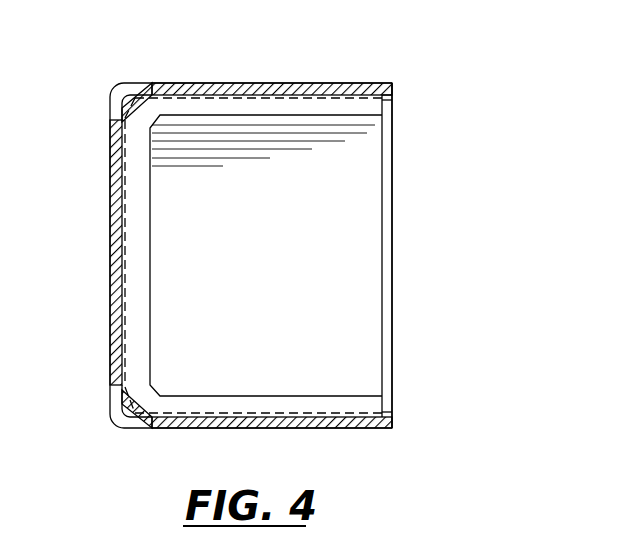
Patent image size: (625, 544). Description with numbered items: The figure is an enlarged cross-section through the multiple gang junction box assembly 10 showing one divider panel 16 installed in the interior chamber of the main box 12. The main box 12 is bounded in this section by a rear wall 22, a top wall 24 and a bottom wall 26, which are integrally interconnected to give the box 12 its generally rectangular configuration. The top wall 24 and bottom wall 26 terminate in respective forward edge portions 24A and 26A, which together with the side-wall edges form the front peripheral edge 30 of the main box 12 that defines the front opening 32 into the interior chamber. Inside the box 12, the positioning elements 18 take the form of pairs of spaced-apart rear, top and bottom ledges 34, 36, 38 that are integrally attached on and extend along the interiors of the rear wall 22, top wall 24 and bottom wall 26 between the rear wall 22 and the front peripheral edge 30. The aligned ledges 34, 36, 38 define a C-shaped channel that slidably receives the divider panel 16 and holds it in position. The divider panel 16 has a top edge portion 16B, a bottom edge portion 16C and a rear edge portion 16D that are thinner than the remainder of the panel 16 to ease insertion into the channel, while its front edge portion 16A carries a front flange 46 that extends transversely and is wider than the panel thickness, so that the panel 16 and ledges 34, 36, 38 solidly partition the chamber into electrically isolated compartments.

The multiple gang junction box assembly 10 is at (160, 68).
The main box 12 is at (368, 80).
The divider panel 16 is at (360, 320).
The front edge portion 16A is at (378, 237).
The top edge portion 16B is at (312, 97).
The bottom edge portion 16C is at (296, 432).
The rear edge portion 16D is at (122, 243).
The positioning element 18 is at (226, 122).
The rear wall 22 is at (110, 296).
The top wall 24 is at (226, 83).
The forward edge portion of top wall 24A is at (393, 88).
The bottom wall 26 is at (190, 430).
The forward edge portion of bottom wall 26A is at (390, 426).
The front peripheral edge 30 is at (374, 430).
The front opening 32 is at (384, 104).
The rear ledge 34 is at (137, 282).
The top ledge 36 is at (292, 105).
The bottom ledge 38 is at (238, 408).
The front flange 46 is at (385, 280).